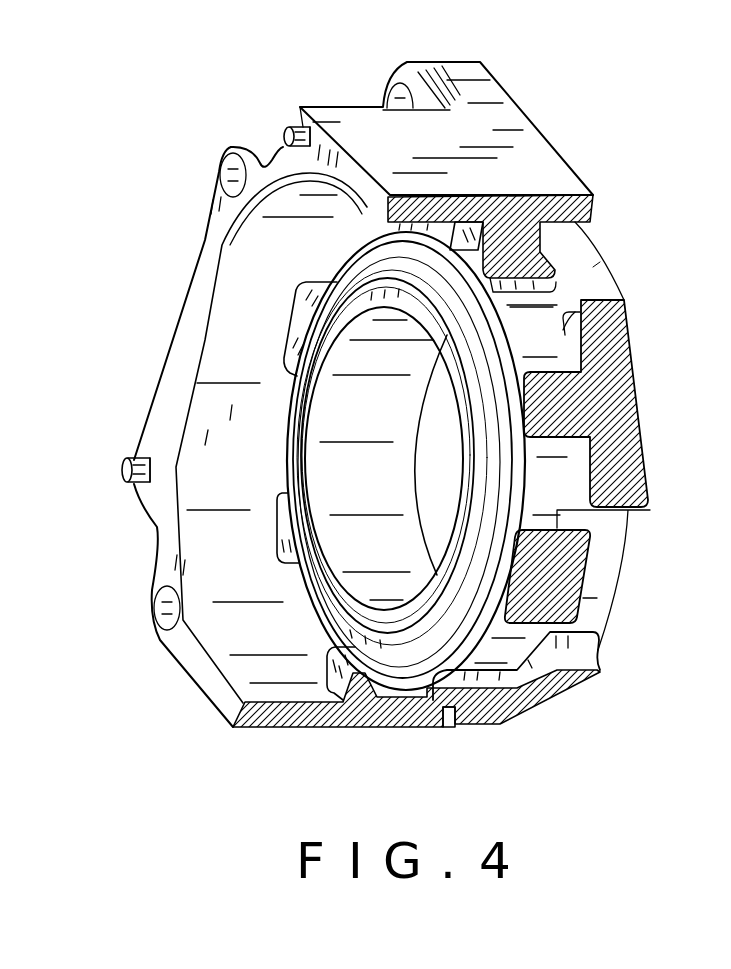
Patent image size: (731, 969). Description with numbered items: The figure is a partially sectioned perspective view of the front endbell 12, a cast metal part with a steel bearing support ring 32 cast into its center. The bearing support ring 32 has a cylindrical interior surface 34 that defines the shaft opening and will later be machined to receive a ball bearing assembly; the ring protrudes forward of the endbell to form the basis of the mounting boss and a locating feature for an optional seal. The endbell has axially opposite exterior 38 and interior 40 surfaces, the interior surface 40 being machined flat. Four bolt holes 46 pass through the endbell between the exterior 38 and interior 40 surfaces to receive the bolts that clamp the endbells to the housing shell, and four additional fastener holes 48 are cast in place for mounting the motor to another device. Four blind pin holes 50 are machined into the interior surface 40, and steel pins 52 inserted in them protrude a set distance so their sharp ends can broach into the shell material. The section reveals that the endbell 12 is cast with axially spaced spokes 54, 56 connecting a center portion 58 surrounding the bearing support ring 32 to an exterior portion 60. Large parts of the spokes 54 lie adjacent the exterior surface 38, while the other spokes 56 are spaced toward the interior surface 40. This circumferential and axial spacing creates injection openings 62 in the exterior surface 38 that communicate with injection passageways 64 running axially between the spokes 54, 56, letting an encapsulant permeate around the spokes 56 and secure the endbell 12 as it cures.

The front endbell 12 is at (537, 157).
The bearing support ring 32 is at (333, 590).
The cylindrical interior surface 34 is at (358, 495).
The exterior surface 38 is at (613, 213).
The interior surface 40 is at (165, 366).
The bolt holes 46 is at (227, 178).
The fastener holes 48 is at (395, 82).
The pin holes 50 is at (312, 137).
The steel pins 52 is at (289, 127).
The spokes 54 is at (640, 423).
The spokes 56 is at (547, 327).
The center portion 58 is at (595, 275).
The exterior portion 60 is at (550, 268).
The injection openings 62 is at (596, 266).
The injection passageways 64 is at (575, 302).